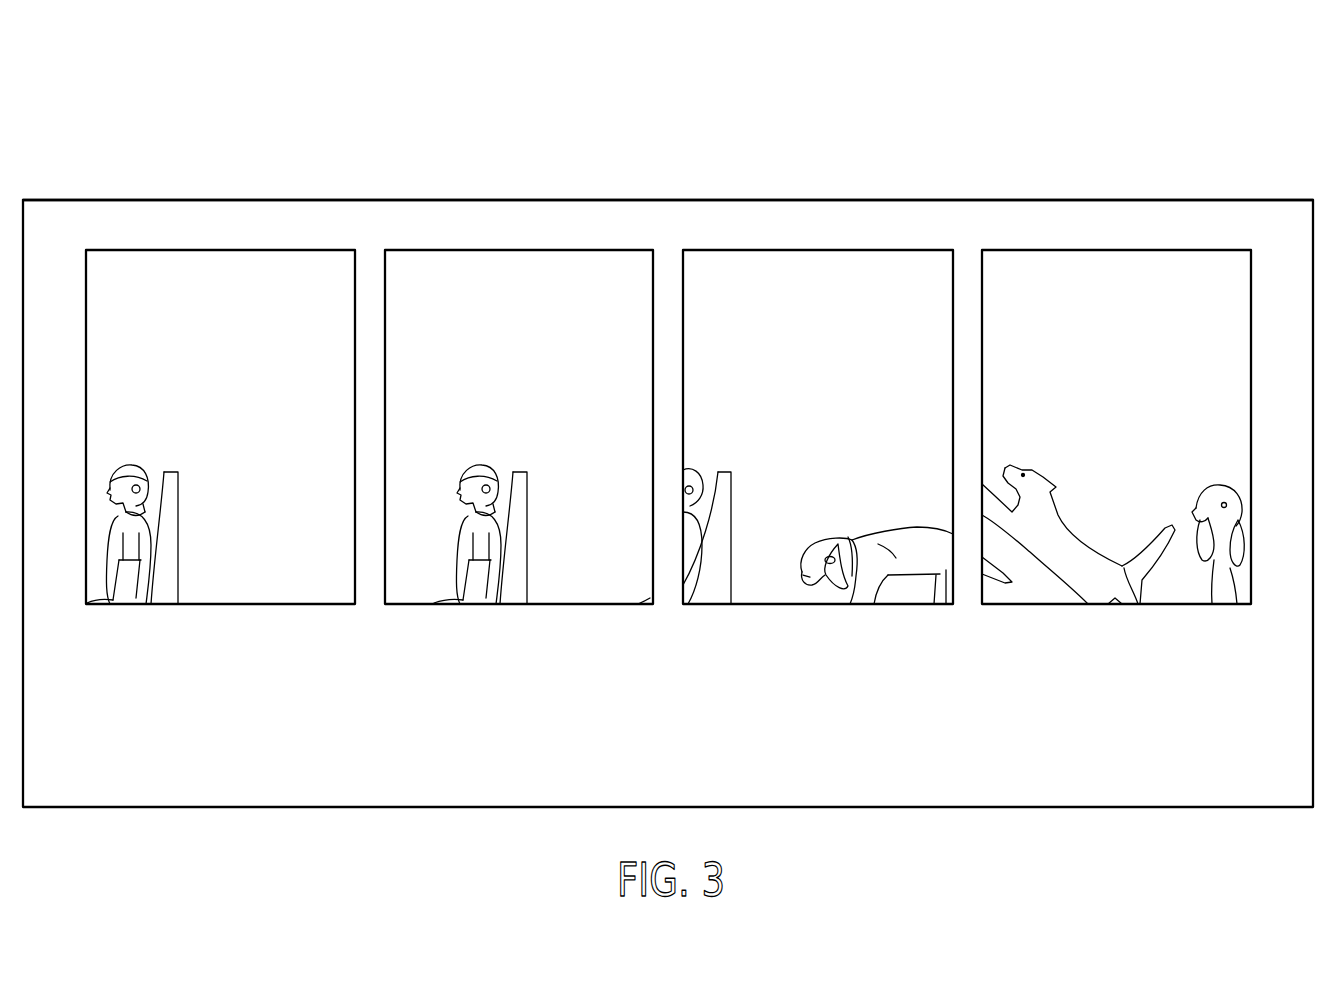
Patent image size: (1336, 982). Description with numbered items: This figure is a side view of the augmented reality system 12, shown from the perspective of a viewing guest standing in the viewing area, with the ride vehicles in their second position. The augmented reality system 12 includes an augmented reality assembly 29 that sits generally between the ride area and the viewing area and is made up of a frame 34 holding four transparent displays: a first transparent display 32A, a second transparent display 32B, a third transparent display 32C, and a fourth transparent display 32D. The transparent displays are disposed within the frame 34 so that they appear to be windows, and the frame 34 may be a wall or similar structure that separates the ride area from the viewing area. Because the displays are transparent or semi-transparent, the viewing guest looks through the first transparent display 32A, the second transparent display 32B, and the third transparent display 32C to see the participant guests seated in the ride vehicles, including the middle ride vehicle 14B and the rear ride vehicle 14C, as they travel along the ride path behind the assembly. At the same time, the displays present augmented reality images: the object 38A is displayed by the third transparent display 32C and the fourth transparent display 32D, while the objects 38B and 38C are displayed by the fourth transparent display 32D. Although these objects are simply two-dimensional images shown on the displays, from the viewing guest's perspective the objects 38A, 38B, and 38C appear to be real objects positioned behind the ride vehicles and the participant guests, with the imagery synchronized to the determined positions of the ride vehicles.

The augmented reality system 12 is at (1152, 58).
The augmented reality assembly 29 is at (1210, 168).
The frame 34 is at (497, 199).
The first transparent display 32A is at (152, 249).
The second transparent display 32B is at (452, 249).
The third transparent display 32C is at (752, 249).
The fourth transparent display 32D is at (1050, 249).
The middle ride vehicle 14B is at (178, 508).
The rear ride vehicle 14C is at (527, 508).
The object 38A is at (910, 527).
The object 38B is at (1088, 538).
The object 38C is at (1218, 485).